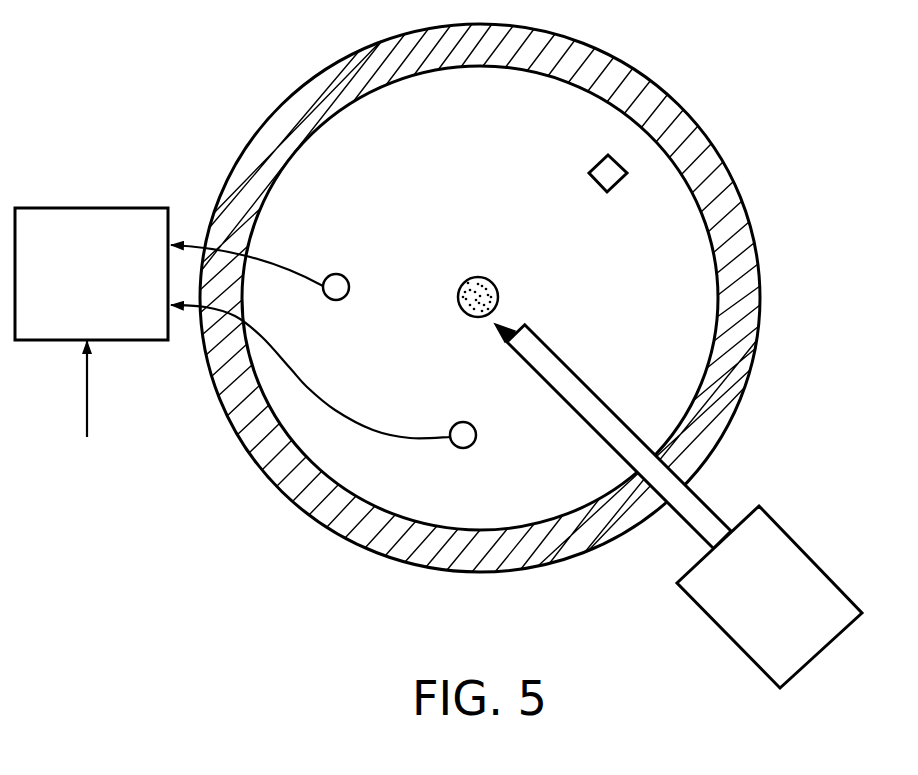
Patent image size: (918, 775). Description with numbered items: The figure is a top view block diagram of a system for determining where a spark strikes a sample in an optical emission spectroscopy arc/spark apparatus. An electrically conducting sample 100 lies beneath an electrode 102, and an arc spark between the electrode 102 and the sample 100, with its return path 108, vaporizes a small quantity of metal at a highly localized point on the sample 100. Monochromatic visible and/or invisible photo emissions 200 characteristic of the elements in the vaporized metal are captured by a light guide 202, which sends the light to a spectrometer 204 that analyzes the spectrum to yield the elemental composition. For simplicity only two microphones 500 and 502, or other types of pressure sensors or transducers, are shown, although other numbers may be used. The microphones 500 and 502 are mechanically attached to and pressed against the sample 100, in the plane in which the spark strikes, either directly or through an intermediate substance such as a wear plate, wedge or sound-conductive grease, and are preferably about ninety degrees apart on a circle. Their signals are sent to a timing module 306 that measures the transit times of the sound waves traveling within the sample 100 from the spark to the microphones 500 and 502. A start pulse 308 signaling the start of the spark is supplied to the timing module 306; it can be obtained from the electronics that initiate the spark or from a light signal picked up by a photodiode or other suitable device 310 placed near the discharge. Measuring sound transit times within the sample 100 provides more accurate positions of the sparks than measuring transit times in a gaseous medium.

The electrically conducting sample 100 is at (450, 500).
The electrode 102 is at (473, 277).
The return path 108 is at (755, 248).
The photo emissions 200 is at (507, 317).
The light guide 202 is at (613, 452).
The spectrometer 204 is at (703, 613).
The timing module 306 is at (70, 319).
The start pulse 308 is at (87, 440).
The photodiode 310 is at (595, 165).
The microphone 500 is at (473, 427).
The microphone 502 is at (346, 277).